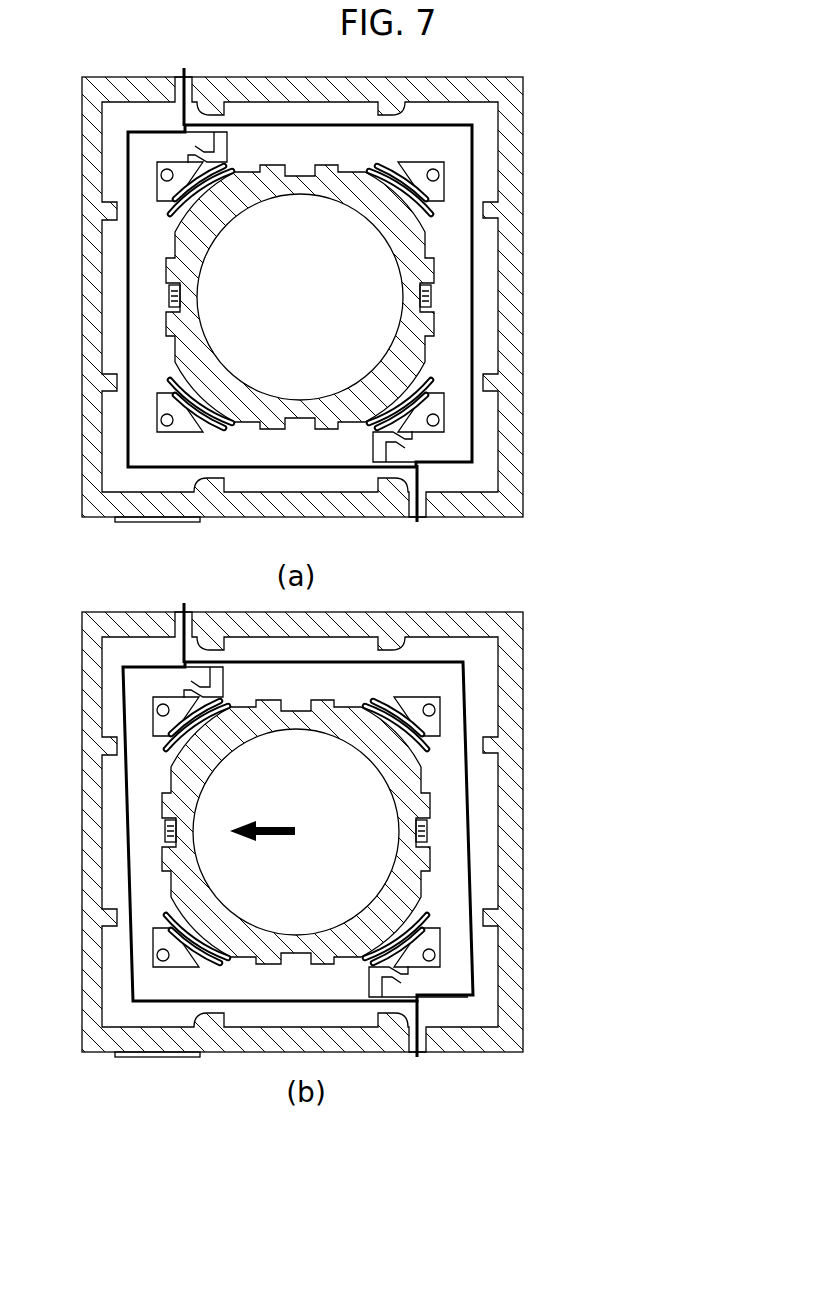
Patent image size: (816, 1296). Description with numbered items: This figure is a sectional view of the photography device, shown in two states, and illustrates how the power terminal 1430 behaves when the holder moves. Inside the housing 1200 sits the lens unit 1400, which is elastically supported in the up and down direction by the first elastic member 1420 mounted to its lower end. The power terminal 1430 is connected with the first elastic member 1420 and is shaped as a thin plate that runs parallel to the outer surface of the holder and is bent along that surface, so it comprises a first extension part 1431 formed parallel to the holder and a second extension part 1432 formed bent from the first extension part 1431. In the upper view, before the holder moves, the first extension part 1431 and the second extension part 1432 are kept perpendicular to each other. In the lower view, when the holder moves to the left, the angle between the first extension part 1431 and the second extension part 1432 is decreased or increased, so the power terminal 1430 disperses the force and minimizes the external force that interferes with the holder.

The housing 1200 is at (513, 216).
The lens unit 1400 is at (415, 325).
The first elastic member 1420 is at (438, 190).
The power terminal 1430 is at (418, 577).
The first extension part 1431 is at (497, 516).
The second extension part 1432 is at (472, 430).